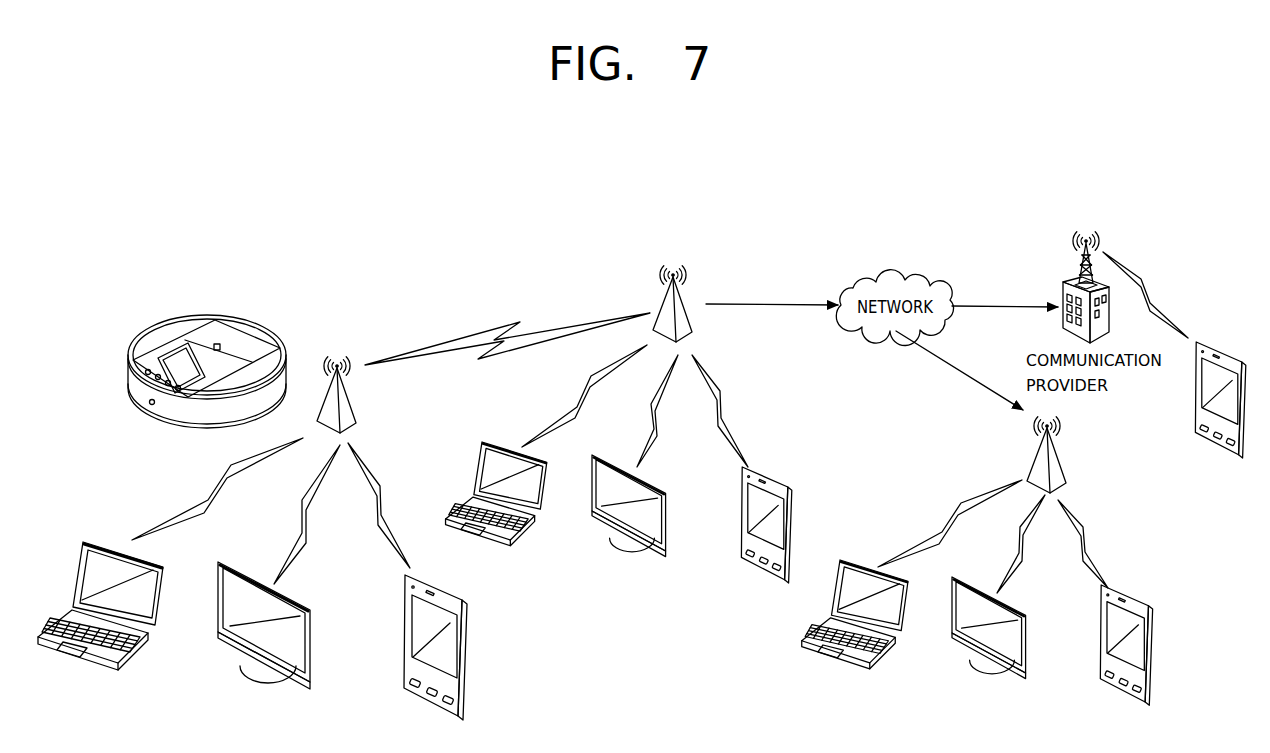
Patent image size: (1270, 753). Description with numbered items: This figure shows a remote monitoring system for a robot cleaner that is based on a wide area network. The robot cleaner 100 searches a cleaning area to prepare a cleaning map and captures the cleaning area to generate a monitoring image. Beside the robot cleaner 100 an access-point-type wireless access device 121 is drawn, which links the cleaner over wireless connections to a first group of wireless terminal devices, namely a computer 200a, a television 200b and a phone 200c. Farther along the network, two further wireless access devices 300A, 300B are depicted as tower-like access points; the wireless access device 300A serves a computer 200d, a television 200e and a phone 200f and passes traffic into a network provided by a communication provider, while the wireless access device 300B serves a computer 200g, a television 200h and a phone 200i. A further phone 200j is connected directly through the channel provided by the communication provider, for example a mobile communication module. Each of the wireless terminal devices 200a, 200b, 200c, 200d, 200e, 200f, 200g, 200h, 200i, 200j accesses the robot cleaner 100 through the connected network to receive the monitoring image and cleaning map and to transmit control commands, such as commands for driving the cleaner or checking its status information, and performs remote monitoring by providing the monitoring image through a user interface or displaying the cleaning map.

The robot cleaner 100 is at (142, 317).
The wireless communication unit / access point 121 is at (348, 397).
The wireless access device 300A is at (686, 302).
The wireless access device 300B is at (1058, 455).
The wireless terminal device 200a is at (80, 650).
The wireless terminal device 200b is at (250, 680).
The wireless terminal device 200c is at (430, 707).
The wireless terminal device 200d is at (480, 530).
The wireless terminal device 200e is at (618, 553).
The wireless terminal device 200f is at (765, 570).
The wireless terminal device 200g is at (837, 652).
The wireless terminal device 200h is at (983, 673).
The wireless terminal device 200i is at (1127, 693).
The wireless terminal device 200j is at (1213, 448).